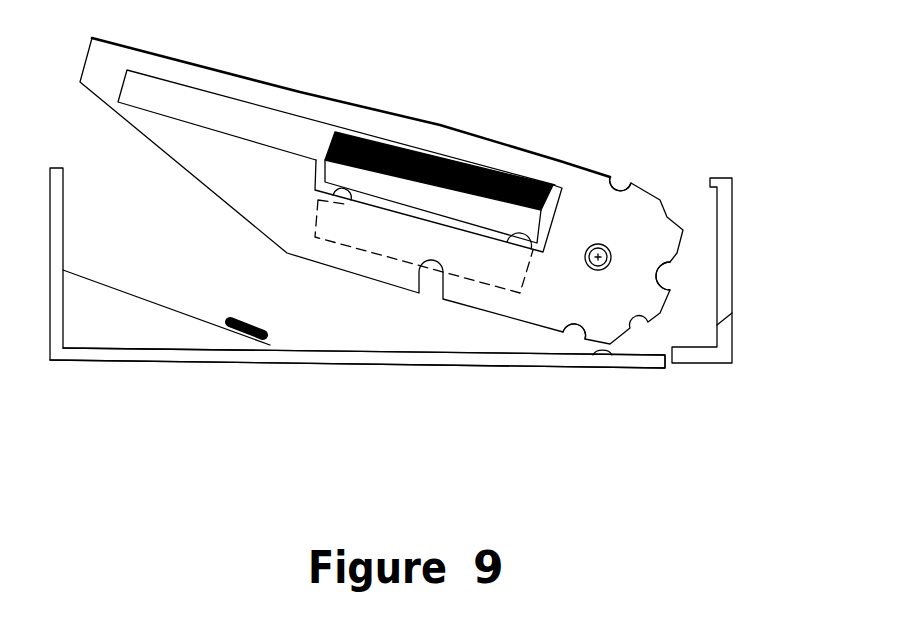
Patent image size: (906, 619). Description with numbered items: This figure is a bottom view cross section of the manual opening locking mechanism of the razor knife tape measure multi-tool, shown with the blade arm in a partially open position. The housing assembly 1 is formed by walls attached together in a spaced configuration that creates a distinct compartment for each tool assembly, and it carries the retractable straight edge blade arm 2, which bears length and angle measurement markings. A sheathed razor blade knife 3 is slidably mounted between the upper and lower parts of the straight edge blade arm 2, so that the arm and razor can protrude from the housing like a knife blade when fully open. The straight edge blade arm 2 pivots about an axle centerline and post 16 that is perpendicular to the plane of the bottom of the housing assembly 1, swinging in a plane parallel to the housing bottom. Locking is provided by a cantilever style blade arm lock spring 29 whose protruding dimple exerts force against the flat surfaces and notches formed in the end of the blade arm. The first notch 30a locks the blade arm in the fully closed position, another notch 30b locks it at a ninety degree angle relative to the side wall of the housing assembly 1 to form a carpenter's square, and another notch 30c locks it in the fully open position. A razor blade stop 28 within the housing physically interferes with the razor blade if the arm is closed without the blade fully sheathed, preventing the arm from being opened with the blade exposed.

The housing assembly 1 is at (735, 334).
The straight edge blade arm 2 is at (235, 71).
The sheathed razor blade knife 3 is at (401, 148).
The axle centerline and post 16 is at (612, 239).
The razor blade stop 28 is at (258, 323).
The blade arm lock spring 29 is at (602, 374).
The first notch 30a is at (565, 340).
The notch 30b is at (677, 276).
The notch 30c is at (620, 175).